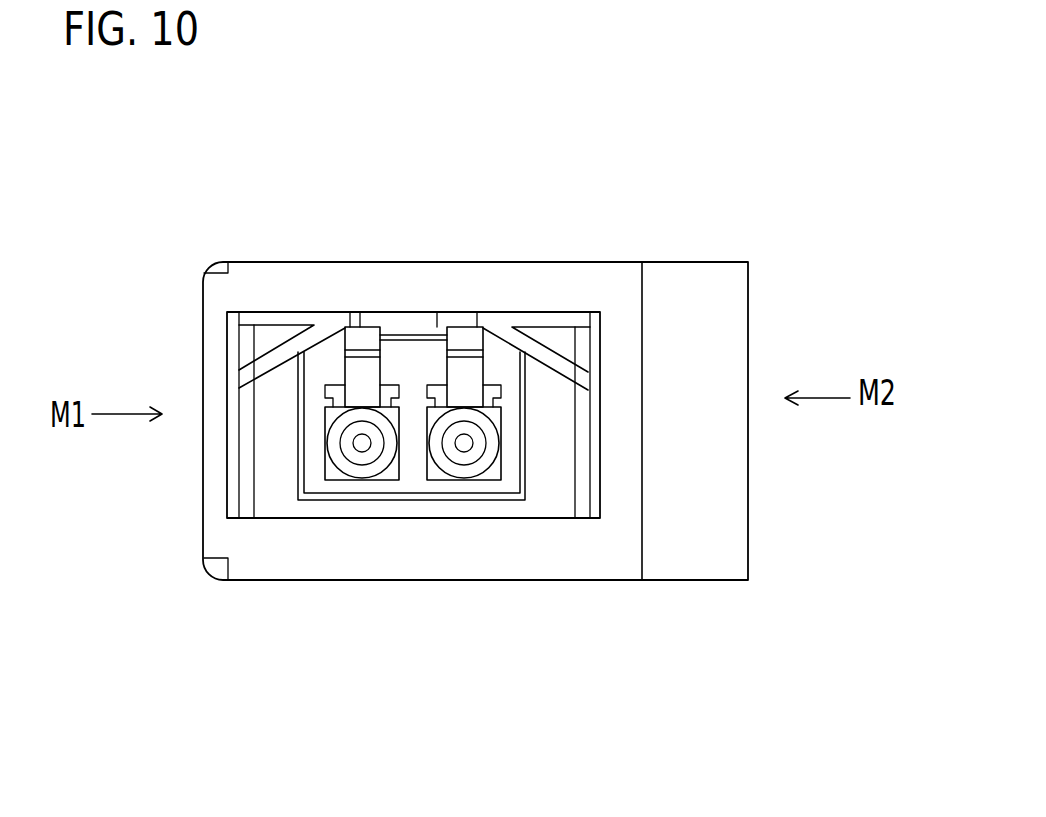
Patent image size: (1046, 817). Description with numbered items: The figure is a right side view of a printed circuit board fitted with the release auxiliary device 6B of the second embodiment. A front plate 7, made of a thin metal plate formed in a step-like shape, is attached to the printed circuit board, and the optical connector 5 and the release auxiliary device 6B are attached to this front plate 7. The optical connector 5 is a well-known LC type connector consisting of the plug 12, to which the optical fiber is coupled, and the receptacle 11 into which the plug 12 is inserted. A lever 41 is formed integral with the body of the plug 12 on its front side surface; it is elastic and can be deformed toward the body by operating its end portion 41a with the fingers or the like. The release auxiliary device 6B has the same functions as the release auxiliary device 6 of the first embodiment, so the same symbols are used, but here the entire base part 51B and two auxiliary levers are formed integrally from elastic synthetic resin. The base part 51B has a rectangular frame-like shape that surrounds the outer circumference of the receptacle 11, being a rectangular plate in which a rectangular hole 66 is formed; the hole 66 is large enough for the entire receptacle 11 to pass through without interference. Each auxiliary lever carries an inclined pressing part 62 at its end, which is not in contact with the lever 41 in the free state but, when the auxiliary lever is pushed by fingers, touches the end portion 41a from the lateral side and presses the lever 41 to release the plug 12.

The optical connector 5 is at (380, 658).
The release auxiliary device 6 is at (554, 297).
The release auxiliary device 6B is at (467, 101).
The front plate 7 is at (749, 323).
The receptacle 11 is at (510, 487).
The plug 12 is at (357, 468).
The lever 41 is at (360, 365).
The end portion 41a is at (358, 338).
The base part 51B is at (432, 322).
The inclined pressing part 62 is at (262, 318).
The rectangular hole 66 is at (322, 499).